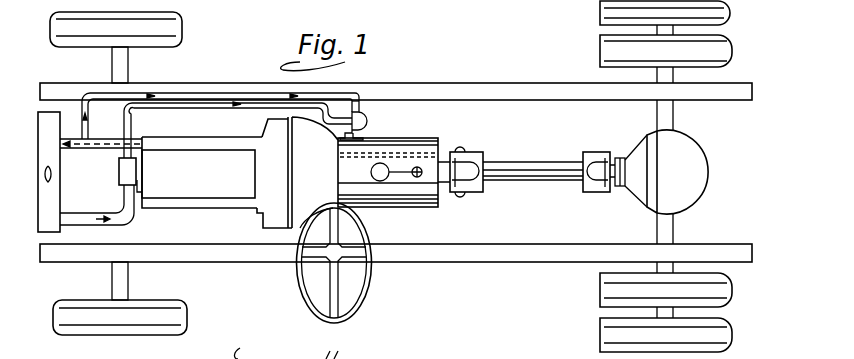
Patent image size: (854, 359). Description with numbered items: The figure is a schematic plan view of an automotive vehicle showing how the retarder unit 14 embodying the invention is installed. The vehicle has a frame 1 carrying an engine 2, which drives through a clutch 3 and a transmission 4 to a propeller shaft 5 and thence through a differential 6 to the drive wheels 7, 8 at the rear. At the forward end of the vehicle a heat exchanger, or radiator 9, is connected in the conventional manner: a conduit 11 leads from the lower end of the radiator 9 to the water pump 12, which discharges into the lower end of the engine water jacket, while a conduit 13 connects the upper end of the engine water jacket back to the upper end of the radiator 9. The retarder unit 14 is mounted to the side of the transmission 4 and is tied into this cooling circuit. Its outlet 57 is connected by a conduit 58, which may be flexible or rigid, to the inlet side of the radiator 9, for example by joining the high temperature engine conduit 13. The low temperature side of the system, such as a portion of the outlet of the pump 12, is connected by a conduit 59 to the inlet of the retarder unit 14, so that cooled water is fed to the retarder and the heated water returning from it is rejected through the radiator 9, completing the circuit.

The frame 1 is at (417, 92).
The engine 2 is at (160, 137).
The clutch 3 is at (303, 195).
The transmission 4 is at (434, 141).
The propeller shaft 5 is at (498, 163).
The differential 6 is at (692, 151).
The drive wheels 7 is at (732, 28).
The drive wheels 8 is at (732, 312).
The radiator 9 is at (43, 136).
The conduit 11 is at (97, 215).
The water pump 12 is at (118, 166).
The conduit 13 is at (103, 139).
The retarder unit 14 is at (374, 121).
The outlet 57 is at (358, 103).
The conduit 58 is at (217, 95).
The conduit 59 is at (152, 110).